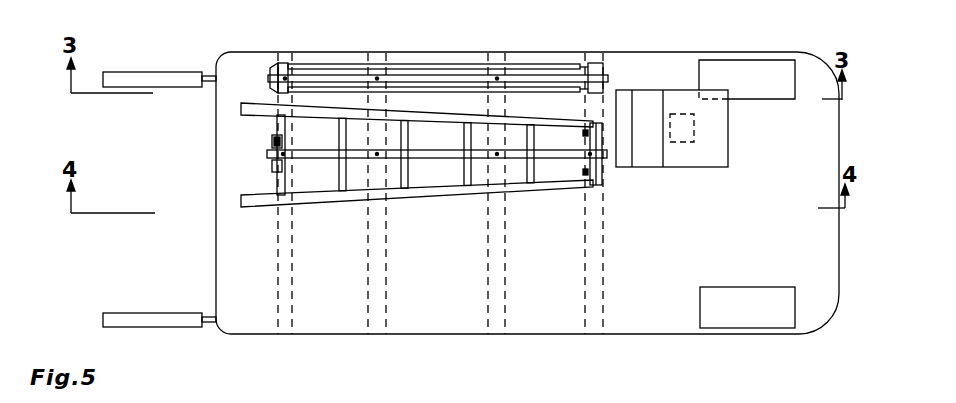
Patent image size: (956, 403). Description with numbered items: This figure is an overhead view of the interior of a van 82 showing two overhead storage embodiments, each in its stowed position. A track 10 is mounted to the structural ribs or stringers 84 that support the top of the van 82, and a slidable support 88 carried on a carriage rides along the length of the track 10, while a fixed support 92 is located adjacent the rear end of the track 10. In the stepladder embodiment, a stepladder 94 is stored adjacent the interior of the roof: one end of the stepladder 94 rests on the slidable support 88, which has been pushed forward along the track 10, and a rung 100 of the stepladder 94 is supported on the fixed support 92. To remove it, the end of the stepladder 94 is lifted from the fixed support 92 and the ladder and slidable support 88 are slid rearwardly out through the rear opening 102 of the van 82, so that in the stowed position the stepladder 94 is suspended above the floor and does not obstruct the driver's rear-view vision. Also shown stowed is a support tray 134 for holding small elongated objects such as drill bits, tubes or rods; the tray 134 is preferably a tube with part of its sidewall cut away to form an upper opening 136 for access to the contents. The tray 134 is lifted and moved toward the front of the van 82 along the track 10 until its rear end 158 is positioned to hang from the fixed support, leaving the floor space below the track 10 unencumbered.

The track 10 is at (568, 75).
The van 82 is at (654, 44).
The structural ribs or stringers 84 is at (377, 262).
The slidable support 88 is at (602, 170).
The fixed support 92 is at (272, 142).
The stepladder 94 is at (415, 191).
The rung 100 is at (277, 186).
The rear opening 102 is at (208, 205).
The support tray 134 is at (443, 64).
The upper opening 136 is at (475, 64).
The rear end 158 is at (273, 72).